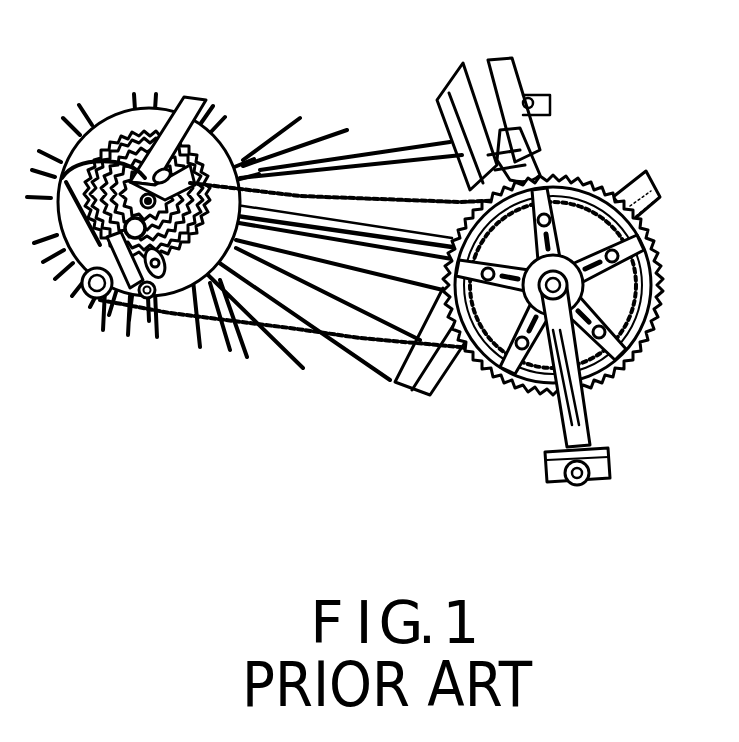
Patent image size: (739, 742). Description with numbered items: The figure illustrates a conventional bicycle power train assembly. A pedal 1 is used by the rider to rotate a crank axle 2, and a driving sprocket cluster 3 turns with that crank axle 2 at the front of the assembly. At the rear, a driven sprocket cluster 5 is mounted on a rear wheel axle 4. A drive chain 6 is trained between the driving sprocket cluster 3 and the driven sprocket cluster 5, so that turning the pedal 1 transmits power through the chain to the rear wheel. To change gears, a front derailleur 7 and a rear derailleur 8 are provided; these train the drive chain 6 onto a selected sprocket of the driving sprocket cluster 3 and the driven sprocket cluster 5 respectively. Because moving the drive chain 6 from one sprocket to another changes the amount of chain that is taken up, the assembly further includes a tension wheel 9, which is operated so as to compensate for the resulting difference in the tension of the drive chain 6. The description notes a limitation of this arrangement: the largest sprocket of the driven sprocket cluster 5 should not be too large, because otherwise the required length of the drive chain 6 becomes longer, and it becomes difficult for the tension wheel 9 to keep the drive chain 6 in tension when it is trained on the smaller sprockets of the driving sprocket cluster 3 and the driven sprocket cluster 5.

The pedal 1 is at (598, 472).
The crank axle 2 is at (568, 287).
The driving sprocket cluster 3 is at (648, 260).
The rear wheel axle 4 is at (58, 245).
The driven sprocket cluster 5 is at (120, 137).
The drive chain 6 is at (317, 332).
The front derailleur 7 is at (507, 148).
The rear derailleur 8 is at (92, 300).
The tension wheel 9 is at (140, 305).